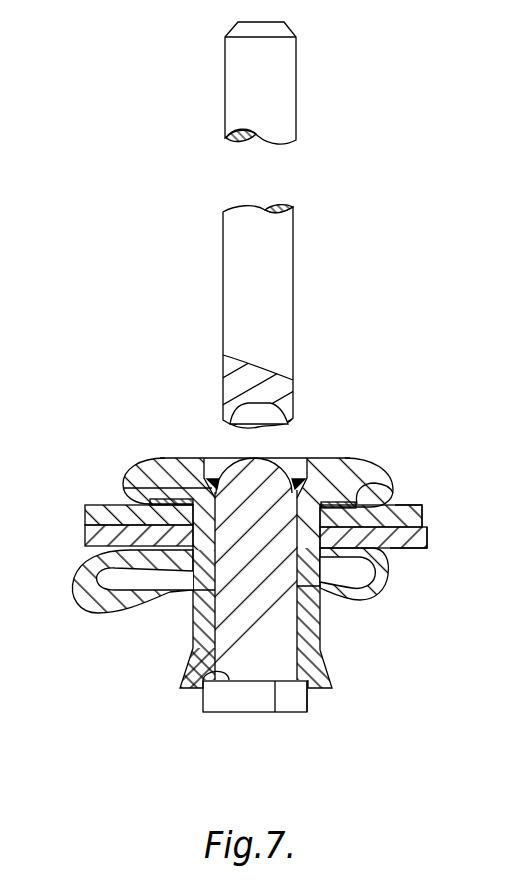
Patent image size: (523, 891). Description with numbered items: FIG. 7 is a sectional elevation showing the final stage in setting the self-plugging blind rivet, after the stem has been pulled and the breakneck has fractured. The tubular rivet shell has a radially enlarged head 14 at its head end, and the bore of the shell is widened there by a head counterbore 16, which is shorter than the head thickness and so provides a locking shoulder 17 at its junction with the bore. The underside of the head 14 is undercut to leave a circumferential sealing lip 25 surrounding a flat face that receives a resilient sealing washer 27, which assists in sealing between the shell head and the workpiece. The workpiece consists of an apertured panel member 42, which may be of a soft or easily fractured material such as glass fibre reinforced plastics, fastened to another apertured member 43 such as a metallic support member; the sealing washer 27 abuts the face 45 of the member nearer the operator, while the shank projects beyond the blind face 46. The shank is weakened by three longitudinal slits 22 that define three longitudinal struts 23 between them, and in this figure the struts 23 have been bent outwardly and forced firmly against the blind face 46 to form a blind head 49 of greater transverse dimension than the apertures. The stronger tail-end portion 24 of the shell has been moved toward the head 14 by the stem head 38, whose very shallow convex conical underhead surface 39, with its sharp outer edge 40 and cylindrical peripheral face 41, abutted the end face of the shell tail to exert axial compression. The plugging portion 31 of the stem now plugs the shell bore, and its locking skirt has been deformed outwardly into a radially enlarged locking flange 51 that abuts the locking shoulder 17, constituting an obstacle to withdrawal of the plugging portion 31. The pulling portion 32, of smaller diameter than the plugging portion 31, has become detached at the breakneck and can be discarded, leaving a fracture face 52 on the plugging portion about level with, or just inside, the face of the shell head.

The head 14 is at (357, 472).
The head counterbore 16 is at (222, 456).
The locking shoulder 17 is at (142, 487).
The longitudinal slits 22 is at (380, 599).
The longitudinal struts 23 is at (124, 600).
The tail-end portion 24 is at (215, 661).
The sealing lip 25 is at (378, 490).
The resilient sealing washer 27 is at (350, 500).
The plugging portion 31 is at (253, 613).
The pulling portion 32 is at (282, 278).
The head 38 is at (308, 699).
The underhead surface 39 is at (191, 687).
The outer edge 40 is at (275, 713).
The peripheral face 41 is at (236, 703).
The apertured panel member 42 is at (426, 541).
The apertured member 43 is at (425, 518).
The face 45 is at (407, 505).
The blind face 46 is at (414, 549).
The blind head 49 is at (73, 580).
The locking flange 51 is at (213, 455).
The fracture face 52 is at (292, 456).